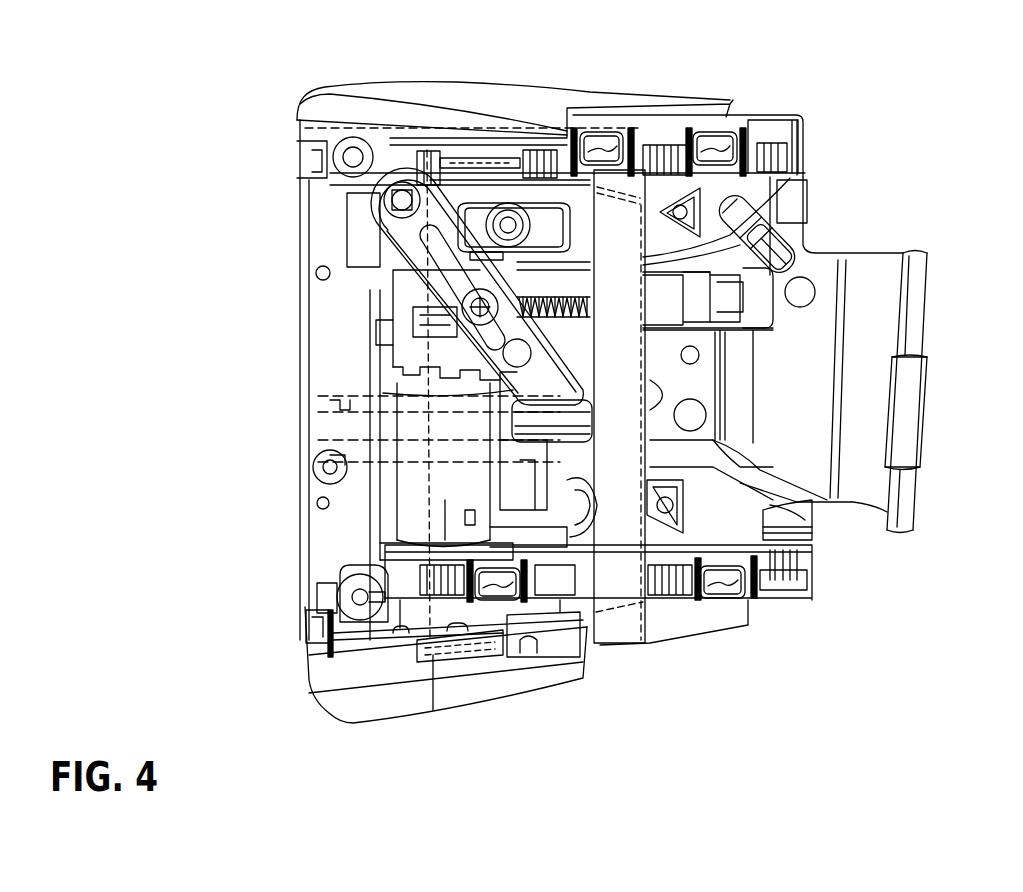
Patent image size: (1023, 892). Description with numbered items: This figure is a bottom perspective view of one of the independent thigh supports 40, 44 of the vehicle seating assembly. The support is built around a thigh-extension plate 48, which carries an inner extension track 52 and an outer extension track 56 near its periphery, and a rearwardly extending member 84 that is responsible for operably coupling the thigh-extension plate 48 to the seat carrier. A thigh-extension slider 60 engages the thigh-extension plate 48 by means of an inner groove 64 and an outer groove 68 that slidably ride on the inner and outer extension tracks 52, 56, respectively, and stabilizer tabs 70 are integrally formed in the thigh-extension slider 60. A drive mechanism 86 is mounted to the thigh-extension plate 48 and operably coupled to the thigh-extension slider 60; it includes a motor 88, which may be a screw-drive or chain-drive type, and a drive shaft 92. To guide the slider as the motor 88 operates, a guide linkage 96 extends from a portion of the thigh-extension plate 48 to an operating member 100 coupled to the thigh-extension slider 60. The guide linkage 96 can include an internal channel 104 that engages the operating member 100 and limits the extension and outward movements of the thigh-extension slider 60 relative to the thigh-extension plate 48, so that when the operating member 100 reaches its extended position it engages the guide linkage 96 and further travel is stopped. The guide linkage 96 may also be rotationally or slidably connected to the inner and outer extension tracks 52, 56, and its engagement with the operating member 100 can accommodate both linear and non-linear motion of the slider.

The first independent thigh support 40 is at (178, 184).
The second independent thigh support 44 is at (593, 393).
The thigh-extension plate 48 is at (545, 520).
The inner extension track 52 is at (420, 530).
The outer extension track 56 is at (373, 153).
The thigh-extension slider 60 is at (765, 132).
The inner groove 64 is at (812, 500).
The outer groove 68 is at (793, 150).
The stabilizer tabs 70 is at (603, 147).
The rearwardly extending member 84 is at (873, 392).
The drive mechanism 86 is at (416, 531).
The motor 88 is at (420, 480).
The drive shaft 92 is at (556, 290).
The guide linkage 96 is at (440, 215).
The operating member 100 is at (620, 260).
The internal channel 104 is at (400, 405).